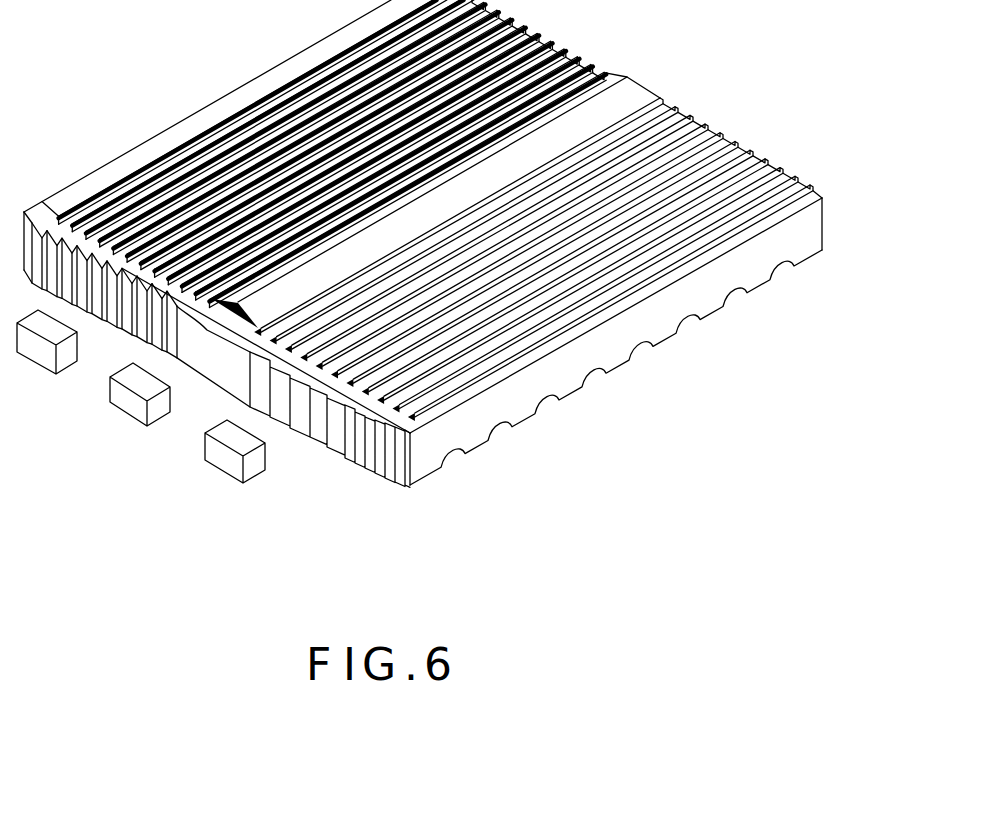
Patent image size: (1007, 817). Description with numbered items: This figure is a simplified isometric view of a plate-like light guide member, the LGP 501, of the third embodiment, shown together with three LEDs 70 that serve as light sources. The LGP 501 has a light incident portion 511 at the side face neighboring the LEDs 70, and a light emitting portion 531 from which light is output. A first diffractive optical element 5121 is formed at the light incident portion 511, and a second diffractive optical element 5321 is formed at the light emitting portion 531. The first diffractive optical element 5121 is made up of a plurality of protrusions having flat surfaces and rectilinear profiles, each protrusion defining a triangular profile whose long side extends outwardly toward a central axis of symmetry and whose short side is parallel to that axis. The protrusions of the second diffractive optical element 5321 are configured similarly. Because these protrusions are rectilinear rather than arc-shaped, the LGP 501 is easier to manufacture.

The light guide member (LGP) 501 is at (456, 263).
The light incident portion 511 is at (403, 468).
The first diffractive optical element 5121 is at (344, 470).
The light emitting portion 531 is at (812, 198).
The second diffractive optical element 5321 is at (563, 35).
The LEDs 70 is at (124, 392).